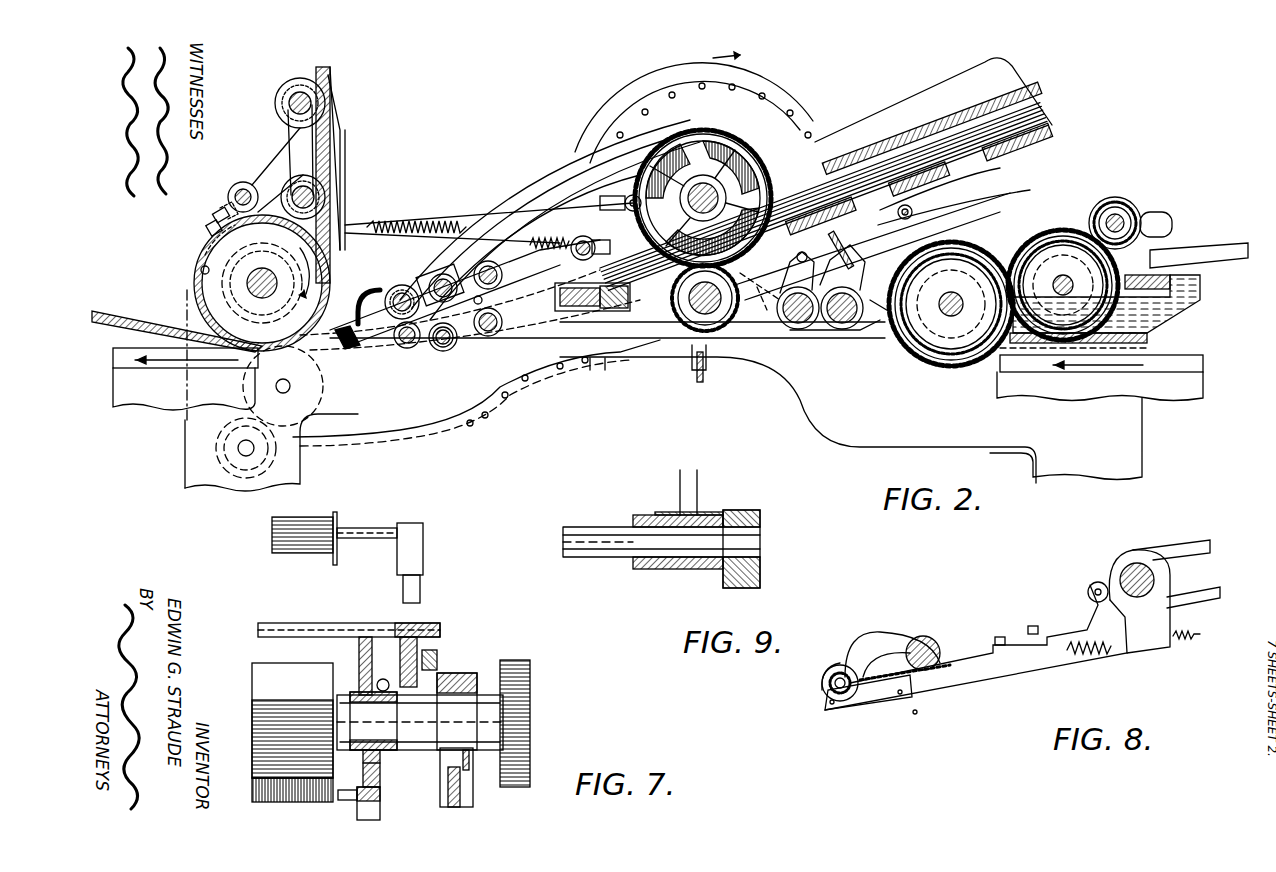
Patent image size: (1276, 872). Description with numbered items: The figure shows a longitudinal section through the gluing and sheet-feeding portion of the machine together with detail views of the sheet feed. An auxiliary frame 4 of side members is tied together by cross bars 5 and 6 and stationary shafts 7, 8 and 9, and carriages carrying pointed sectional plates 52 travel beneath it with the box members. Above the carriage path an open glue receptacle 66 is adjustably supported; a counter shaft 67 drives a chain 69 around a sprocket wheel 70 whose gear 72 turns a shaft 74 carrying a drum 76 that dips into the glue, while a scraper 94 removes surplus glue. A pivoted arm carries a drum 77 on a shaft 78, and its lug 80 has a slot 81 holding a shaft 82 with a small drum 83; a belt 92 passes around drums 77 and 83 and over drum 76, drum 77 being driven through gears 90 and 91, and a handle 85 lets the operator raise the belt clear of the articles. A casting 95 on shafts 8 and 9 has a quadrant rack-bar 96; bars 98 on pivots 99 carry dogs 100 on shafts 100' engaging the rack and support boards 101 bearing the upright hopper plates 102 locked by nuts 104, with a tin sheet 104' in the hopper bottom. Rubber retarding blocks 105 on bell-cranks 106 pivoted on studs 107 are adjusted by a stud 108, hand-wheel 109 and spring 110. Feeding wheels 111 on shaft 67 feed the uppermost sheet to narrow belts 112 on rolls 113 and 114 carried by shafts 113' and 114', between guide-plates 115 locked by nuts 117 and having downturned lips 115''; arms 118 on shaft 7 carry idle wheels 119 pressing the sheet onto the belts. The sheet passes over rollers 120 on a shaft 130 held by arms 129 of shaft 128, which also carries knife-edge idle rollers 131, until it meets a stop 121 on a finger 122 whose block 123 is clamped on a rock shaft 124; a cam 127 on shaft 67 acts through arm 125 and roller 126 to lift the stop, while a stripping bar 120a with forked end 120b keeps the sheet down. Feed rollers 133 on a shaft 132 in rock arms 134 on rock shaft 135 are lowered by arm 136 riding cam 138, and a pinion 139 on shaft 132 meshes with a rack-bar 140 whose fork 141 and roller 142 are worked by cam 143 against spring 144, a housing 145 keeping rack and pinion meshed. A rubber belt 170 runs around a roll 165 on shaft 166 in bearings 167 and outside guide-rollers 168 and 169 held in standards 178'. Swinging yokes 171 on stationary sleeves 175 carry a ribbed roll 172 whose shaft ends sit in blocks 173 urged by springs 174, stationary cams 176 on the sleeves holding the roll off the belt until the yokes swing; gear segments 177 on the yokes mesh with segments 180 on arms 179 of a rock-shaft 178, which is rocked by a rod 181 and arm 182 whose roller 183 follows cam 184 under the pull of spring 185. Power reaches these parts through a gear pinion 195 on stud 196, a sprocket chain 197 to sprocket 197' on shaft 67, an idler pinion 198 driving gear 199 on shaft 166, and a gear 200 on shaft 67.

In FIG. 2, the auxiliary frame 4 is at (197, 427).
In FIG. 7, the auxiliary frame 4 is at (467, 800).
In FIG. 2, the cross bar 5 is at (440, 348).
In FIG. 2, the cross bar 6 is at (545, 308).
In FIG. 2, the stationary shaft 7 is at (545, 232).
In FIG. 2, the stationary shaft 8 is at (790, 322).
In FIG. 2, the stationary shaft 9 is at (832, 323).
In FIG. 2, the sectional plates 52 is at (153, 393).
In FIG. 2, the glue receptacle 66 is at (1100, 320).
In FIG. 2, the counter shaft 67 is at (770, 130).
In FIG. 8, the counter shaft 67 is at (1130, 578).
In FIG. 2, the driving chain 69 is at (780, 150).
In FIG. 2, the sprocket wheel 70 is at (1015, 225).
In FIG. 2, the gear 72 is at (1000, 240).
In FIG. 2, the shaft 74 is at (1147, 343).
In FIG. 2, the drum 76 is at (1115, 205).
In FIG. 2, the drum 77 is at (946, 296).
In FIG. 2, the shaft 78 is at (956, 316).
In FIG. 2, the lug 80 is at (1133, 260).
In FIG. 2, the slot 81 is at (1140, 263).
In FIG. 2, the shaft 82 is at (1110, 237).
In FIG. 2, the small drum 83 is at (1120, 215).
In FIG. 2, the handle 85 is at (1152, 262).
In FIG. 2, the gear 90 is at (1095, 250).
In FIG. 2, the gear 91 is at (878, 318).
In FIG. 2, the belt 92 is at (1090, 270).
In FIG. 2, the scraper 94 is at (1073, 293).
In FIG. 2, the casting 95 is at (862, 330).
In FIG. 2, the quadrant-shaped rack-bar 96 is at (945, 230).
In FIG. 2, the bars 98 is at (1045, 125).
In FIG. 2, the pivots 99 is at (880, 205).
In FIG. 2, the dog 100 is at (985, 199).
In FIG. 2, the shaft 100' is at (1033, 164).
In FIG. 2, the boards or plates 101 is at (1040, 110).
In FIG. 2, the upright plates 102 is at (1012, 82).
In FIG. 2, the nuts 104 is at (1039, 148).
In FIG. 2, the sheet of tin 104' is at (1042, 76).
In FIG. 2, the retarding blocks 105 is at (696, 372).
In FIG. 2, the bell-cranks 106 is at (708, 375).
In FIG. 2, the studs 107 is at (845, 230).
In FIG. 2, the stud 108 is at (900, 215).
In FIG. 2, the hand-wheel 109 is at (880, 200).
In FIG. 2, the spring 110 is at (857, 245).
In FIG. 2, the feeding wheels 111 is at (655, 150).
In FIG. 2, the narrow belts 112 is at (520, 292).
In FIG. 2, the rolls 113 is at (625, 370).
In FIG. 2, the shaft 113' is at (676, 370).
In FIG. 2, the rolls 114 is at (573, 371).
In FIG. 2, the shaft 114' is at (568, 374).
In FIG. 2, the guide-plates 115 is at (503, 185).
In FIG. 2, the downwardly turned lip 115'' is at (558, 393).
In FIG. 2, the nuts 117 is at (585, 335).
In FIG. 2, the arm 118 is at (457, 270).
In FIG. 2, the idle wheel 119 is at (535, 302).
In FIG. 2, the rollers 120 is at (590, 330).
In FIG. 2, the bar 120a is at (462, 285).
In FIG. 2, the forked end 120b is at (347, 333).
In FIG. 2, the stop 121 is at (455, 350).
In FIG. 2, the finger 122 is at (430, 232).
In FIG. 2, the block 123 is at (480, 312).
In FIG. 2, the rock shaft 124 is at (410, 225).
In FIG. 2, the arm 125 is at (535, 192).
In FIG. 2, the roller 126 is at (690, 72).
In FIG. 2, the cam 127 is at (660, 110).
In FIG. 2, the shaft 128 is at (560, 330).
In FIG. 2, the arms 129 is at (575, 330).
In FIG. 2, the shaft 130 is at (420, 342).
In FIG. 2, the idle rollers 131 is at (540, 340).
In FIG. 2, the shaft 132 is at (450, 265).
In FIG. 9, the shaft 132 is at (752, 540).
In FIG. 8, the shaft 132 is at (838, 690).
In FIG. 2, the feed rollers 133 is at (400, 298).
In FIG. 8, the feed rollers 133 is at (852, 680).
In FIG. 9, the rock arms 134 is at (698, 490).
In FIG. 8, the rock arms 134 is at (898, 640).
In FIG. 2, the rock shaft 135 is at (470, 300).
In FIG. 8, the rock shaft 135 is at (925, 645).
In FIG. 2, the arm 136 is at (520, 205).
In FIG. 2, the cam 138 is at (630, 165).
In FIG. 9, the pinion 139 is at (725, 560).
In FIG. 8, the pinion 139 is at (832, 686).
In FIG. 9, the sliding rack-bar 140 is at (750, 580).
In FIG. 8, the sliding rack-bar 140 is at (905, 684).
In FIG. 8, the fork 141 is at (1100, 618).
In FIG. 8, the roller 142 is at (1090, 590).
In FIG. 8, the cam 143 is at (1140, 645).
In FIG. 8, the spring 144 is at (1105, 652).
In FIG. 8, the housing 145 is at (880, 700).
In FIG. 2, the roll 165 is at (207, 250).
In FIG. 7, the roll 165 is at (290, 682).
In FIG. 2, the shaft 166 is at (260, 283).
In FIG. 7, the shaft 166 is at (530, 720).
In FIG. 7, the bearings 167 is at (413, 720).
In FIG. 2, the idle guide-roller 168 is at (323, 85).
In FIG. 7, the idle guide-roller 168 is at (290, 535).
In FIG. 2, the idle guide-roller 169 is at (307, 177).
In FIG. 2, the belt 170 is at (328, 107).
In FIG. 7, the belt 170 is at (260, 773).
In FIG. 2, the swinging yokes 171 is at (398, 345).
In FIG. 7, the swinging yokes 171 is at (360, 763).
In FIG. 2, the small roll 172 is at (405, 350).
In FIG. 7, the small roll 172 is at (257, 787).
In FIG. 7, the blocks 173 is at (380, 797).
In FIG. 2, the springs 174 is at (470, 350).
In FIG. 7, the springs 174 is at (357, 798).
In FIG. 7, the stationary sleeves 175 is at (377, 733).
In FIG. 2, the stationary cam 176 is at (297, 147).
In FIG. 7, the stationary cam 176 is at (372, 750).
In FIG. 7, the gear segment 177 is at (357, 650).
In FIG. 2, the rock-shaft 178 is at (267, 182).
In FIG. 7, the rock-shaft 178 is at (264, 688).
In FIG. 7, the standards 178' is at (456, 571).
In FIG. 2, the arms 179 is at (213, 227).
In FIG. 7, the arms 179 is at (363, 677).
In FIG. 2, the gear segments 180 is at (217, 217).
In FIG. 7, the gear segments 180 is at (355, 667).
In FIG. 2, the rod 181 is at (378, 196).
In FIG. 7, the rod 181 is at (440, 658).
In FIG. 2, the arm 182 is at (228, 217).
In FIG. 7, the arm 182 is at (433, 647).
In FIG. 2, the roller 183 is at (548, 180).
In FIG. 2, the cam 184 is at (615, 180).
In FIG. 2, the spring 185 is at (405, 228).
In FIG. 2, the gear pinion 195 is at (302, 425).
In FIG. 2, the stud 196 is at (243, 447).
In FIG. 2, the sprocket chain 197 is at (619, 254).
In FIG. 2, the sprocket 197' is at (817, 95).
In FIG. 2, the idler pinion 198 is at (322, 402).
In FIG. 2, the gear 199 is at (203, 272).
In FIG. 7, the gear 199 is at (525, 690).
In FIG. 2, the gear 200 is at (560, 165).